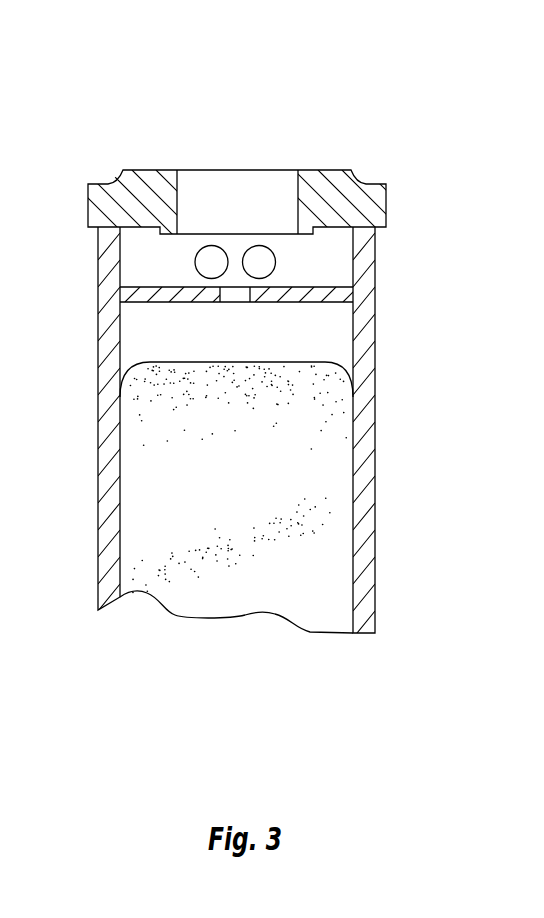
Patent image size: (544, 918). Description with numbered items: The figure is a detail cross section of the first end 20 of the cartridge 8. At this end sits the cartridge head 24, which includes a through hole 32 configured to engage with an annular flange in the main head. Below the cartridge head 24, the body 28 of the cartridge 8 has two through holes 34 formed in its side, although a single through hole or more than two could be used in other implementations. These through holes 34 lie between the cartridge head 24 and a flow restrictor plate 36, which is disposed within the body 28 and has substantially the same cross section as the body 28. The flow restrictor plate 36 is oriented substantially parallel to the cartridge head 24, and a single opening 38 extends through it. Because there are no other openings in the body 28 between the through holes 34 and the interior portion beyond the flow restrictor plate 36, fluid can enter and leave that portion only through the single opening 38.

The cartridge 8 is at (417, 139).
The first end 20 is at (239, 446).
The cartridge head 24 is at (248, 161).
The body 28 is at (362, 435).
The through hole 32 is at (253, 183).
The through holes 34 is at (210, 260).
The flow restrictor plate 36 is at (180, 325).
The single opening 38 is at (233, 297).